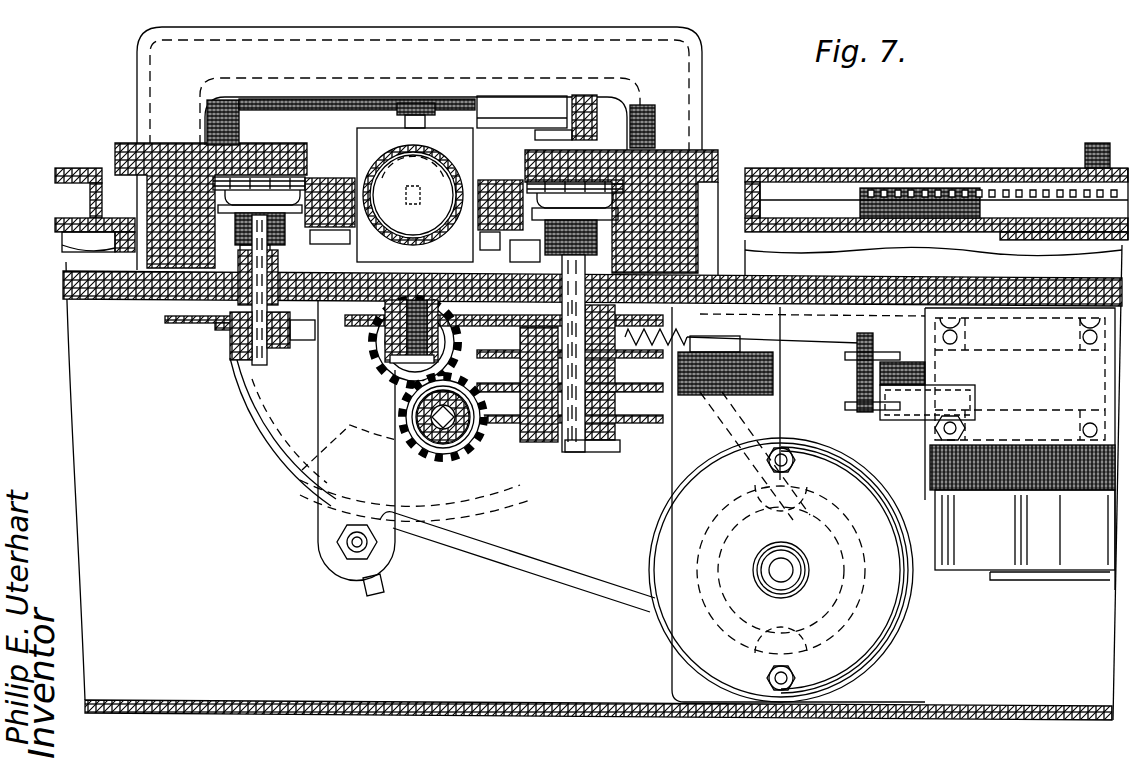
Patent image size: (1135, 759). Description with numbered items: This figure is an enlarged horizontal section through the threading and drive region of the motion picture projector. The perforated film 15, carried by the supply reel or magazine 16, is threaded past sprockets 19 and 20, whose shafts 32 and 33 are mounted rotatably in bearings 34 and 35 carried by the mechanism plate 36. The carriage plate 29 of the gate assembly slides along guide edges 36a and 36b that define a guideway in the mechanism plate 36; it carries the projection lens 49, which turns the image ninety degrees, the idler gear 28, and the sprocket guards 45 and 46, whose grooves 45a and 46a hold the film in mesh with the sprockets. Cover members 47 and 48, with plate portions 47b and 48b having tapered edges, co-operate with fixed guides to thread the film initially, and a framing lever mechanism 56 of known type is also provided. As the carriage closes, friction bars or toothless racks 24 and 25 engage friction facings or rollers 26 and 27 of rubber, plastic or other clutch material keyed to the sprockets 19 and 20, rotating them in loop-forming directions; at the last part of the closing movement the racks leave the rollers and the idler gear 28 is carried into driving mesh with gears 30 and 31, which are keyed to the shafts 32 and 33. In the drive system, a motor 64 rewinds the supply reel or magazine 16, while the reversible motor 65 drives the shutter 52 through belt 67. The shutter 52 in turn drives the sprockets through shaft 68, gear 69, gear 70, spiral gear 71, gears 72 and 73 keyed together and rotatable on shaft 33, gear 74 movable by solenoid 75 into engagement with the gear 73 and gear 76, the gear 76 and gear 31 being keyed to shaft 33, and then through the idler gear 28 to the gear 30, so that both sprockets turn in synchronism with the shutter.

The perforated film 15 is at (1003, 200).
The supply reel or magazine 16 is at (920, 180).
The sprocket 19 is at (235, 190).
The sprocket 20 is at (585, 192).
The friction bar or toothless rack 24 is at (310, 262).
The friction bar or toothless rack 25 is at (522, 280).
The friction facing or roller 26 is at (240, 230).
The friction facing or roller 27 is at (593, 253).
The idler gear 28 is at (375, 330).
The carriage plate 29 is at (390, 275).
The gear 30 is at (185, 317).
The gear 31 is at (650, 300).
The shaft 32 is at (235, 340).
The shaft 33 is at (588, 300).
The bearing 34 is at (245, 285).
The bearing 35 is at (585, 290).
The mechanism plate 36 is at (70, 290).
The guide edge 36a is at (325, 355).
The guide edge 36b is at (486, 280).
The sprocket guard 45 is at (320, 178).
The groove 45a is at (300, 165).
The sprocket guard 46 is at (508, 178).
The groove 46a is at (520, 205).
The cover member 47 is at (165, 147).
The plate portion 47b is at (238, 143).
The cover member 48 is at (668, 158).
The plate portion 48b is at (600, 155).
The projection lens 49 is at (430, 153).
The shutter 52 is at (295, 428).
The framing lever mechanism 56 is at (600, 112).
The motor 64 is at (980, 560).
The reversible motor 65 is at (690, 624).
The belt 67 is at (470, 542).
The shaft 68 is at (430, 375).
The gear 69 is at (398, 372).
The gear 70 is at (403, 414).
The spiral gear 71 is at (408, 442).
The gear 72 is at (642, 392).
The gear 73 is at (630, 388).
The gear 74 is at (770, 375).
The solenoid 75 is at (925, 415).
The gear 76 is at (632, 352).